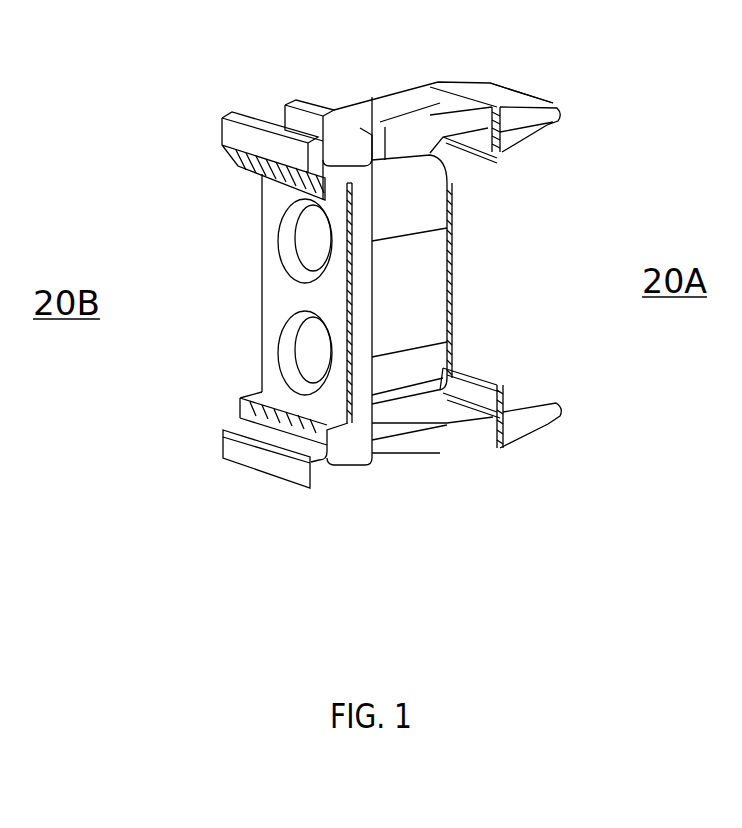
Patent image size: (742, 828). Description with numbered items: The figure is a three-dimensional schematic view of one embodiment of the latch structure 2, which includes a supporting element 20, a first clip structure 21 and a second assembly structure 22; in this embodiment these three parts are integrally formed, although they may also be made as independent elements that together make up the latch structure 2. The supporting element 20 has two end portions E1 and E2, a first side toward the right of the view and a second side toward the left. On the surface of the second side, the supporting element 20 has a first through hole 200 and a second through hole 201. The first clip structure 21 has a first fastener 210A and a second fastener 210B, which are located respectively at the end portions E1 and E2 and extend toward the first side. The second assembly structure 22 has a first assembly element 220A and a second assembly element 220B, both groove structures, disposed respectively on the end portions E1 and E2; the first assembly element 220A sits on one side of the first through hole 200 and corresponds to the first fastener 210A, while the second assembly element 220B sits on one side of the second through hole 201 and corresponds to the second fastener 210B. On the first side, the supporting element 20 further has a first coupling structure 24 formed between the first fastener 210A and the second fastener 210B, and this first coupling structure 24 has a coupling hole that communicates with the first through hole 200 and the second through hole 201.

The latch structure 2 is at (172, 98).
The supporting element 20 is at (273, 286).
The first through hole 200 is at (313, 358).
The second through hole 201 is at (300, 247).
The second assembly structure 22 is at (248, 112).
The second assembly element 220B is at (337, 153).
The first assembly element 220A is at (342, 462).
The first coupling structure 24 is at (433, 285).
The second fastener 210B is at (407, 107).
The first fastener 210A is at (447, 443).
The first clip structure 21 is at (548, 94).
The end portion E1 is at (352, 442).
The end portion E2 is at (348, 180).